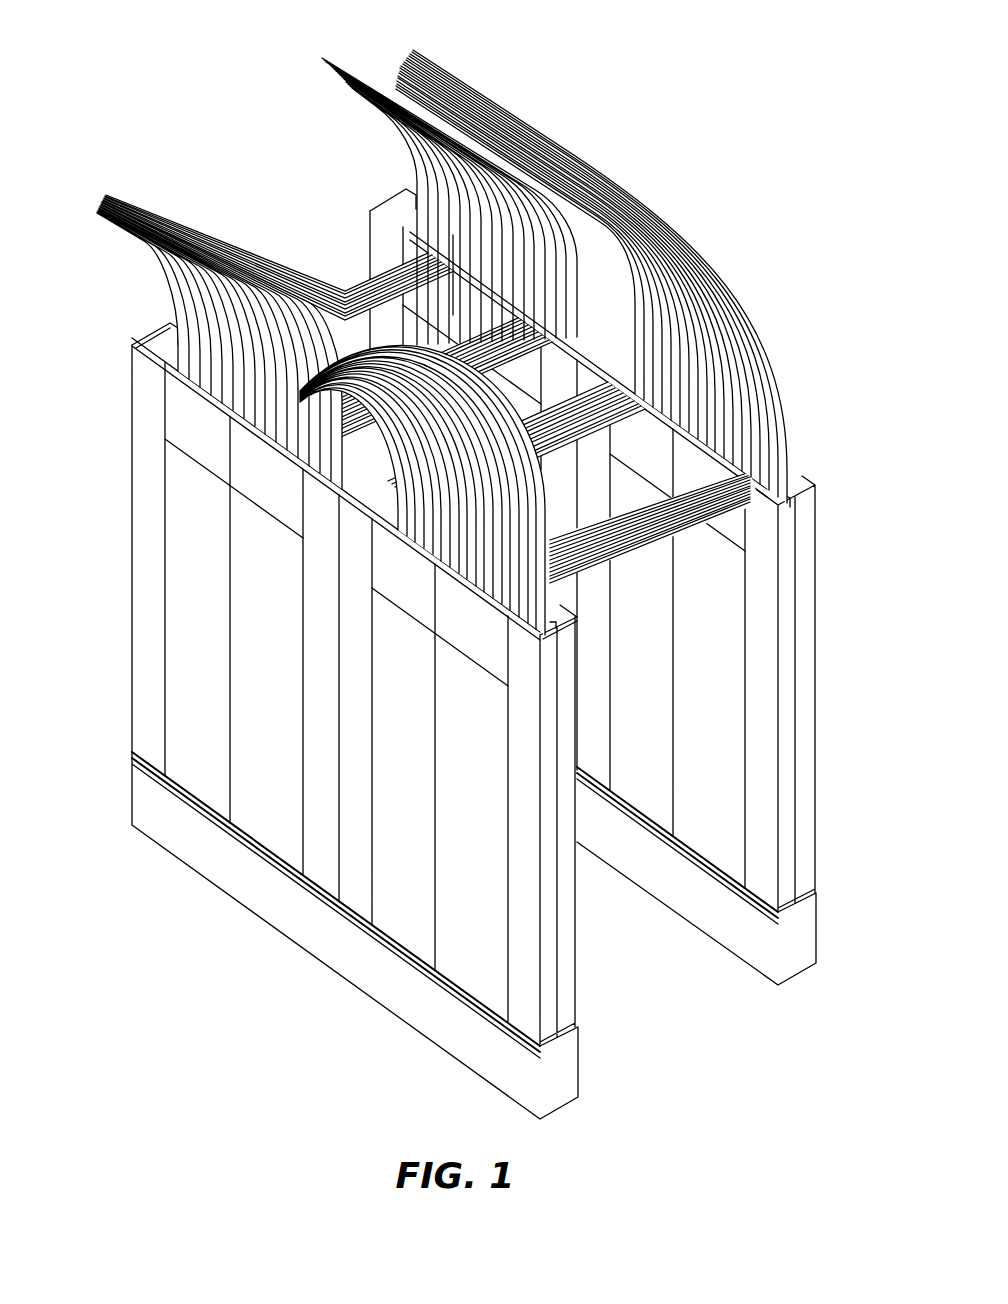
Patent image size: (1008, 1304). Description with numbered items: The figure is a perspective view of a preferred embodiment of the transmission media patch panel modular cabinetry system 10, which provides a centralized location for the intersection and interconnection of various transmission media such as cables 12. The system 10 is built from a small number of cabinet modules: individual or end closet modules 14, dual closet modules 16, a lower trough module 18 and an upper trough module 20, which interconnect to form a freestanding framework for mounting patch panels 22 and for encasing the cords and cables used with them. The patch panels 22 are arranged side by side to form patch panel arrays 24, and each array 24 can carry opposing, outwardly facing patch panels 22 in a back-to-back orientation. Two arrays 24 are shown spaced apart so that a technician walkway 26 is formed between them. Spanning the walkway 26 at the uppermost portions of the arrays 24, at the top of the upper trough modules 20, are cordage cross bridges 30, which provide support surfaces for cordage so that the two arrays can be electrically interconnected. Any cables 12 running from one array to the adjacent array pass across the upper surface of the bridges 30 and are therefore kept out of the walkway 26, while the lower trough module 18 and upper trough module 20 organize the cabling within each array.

The transmission media patch panel modular cabinetry system 10 is at (485, 584).
The cables 12 is at (224, 232).
The end closet modules 14 is at (150, 603).
The dual closet modules 16 is at (352, 600).
The lower trough module 18 is at (215, 857).
The upper trough module 20 is at (222, 452).
The patch panels 22 is at (186, 667).
The patch panel arrays 24 is at (494, 654).
The technician walkway 26 is at (494, 584).
The cordage cross bridges 30 is at (362, 272).